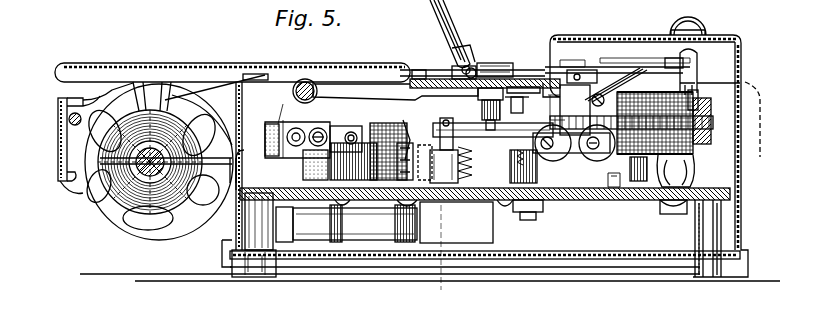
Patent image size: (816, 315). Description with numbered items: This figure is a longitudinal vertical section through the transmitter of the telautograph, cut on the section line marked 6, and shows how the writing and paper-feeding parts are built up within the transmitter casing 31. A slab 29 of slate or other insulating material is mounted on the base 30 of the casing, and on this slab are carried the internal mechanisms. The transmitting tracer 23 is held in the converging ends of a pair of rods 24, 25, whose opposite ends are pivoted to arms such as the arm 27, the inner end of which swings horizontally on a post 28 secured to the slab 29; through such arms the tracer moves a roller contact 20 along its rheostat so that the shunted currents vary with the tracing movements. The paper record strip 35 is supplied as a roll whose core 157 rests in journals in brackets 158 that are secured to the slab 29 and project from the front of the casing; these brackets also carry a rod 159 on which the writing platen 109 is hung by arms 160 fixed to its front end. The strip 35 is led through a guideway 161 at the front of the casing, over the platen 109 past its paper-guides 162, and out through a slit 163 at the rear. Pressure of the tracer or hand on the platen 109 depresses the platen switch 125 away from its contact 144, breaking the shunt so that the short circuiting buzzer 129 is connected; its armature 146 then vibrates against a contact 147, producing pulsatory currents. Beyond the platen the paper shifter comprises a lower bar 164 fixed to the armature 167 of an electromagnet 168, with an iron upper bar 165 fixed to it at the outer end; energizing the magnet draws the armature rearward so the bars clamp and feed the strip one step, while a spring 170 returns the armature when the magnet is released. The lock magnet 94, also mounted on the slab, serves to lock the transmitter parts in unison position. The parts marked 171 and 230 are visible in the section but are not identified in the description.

The section line 6- 6 is at (540, 60).
The roller contact 20 is at (405, 155).
The transmitting tracer 23 is at (459, 44).
The rod 24 is at (494, 66).
The rod 25 is at (595, 73).
The arm 27 is at (628, 78).
The post 28 is at (536, 172).
The slab 29 is at (606, 203).
The base 30 is at (593, 257).
The transmitter casing 31 is at (236, 130).
The paper record strip 35 is at (143, 112).
The lock magnet 94 is at (595, 160).
The writing platen 109 is at (440, 80).
The platen switch 125 is at (520, 136).
The short circuiting buzzer 129 is at (318, 128).
The contact 144 is at (512, 160).
The armature 146 is at (296, 126).
The contact 147 is at (236, 170).
The core 157 is at (135, 182).
The bracket 158 is at (75, 147).
The rod 159 is at (300, 82).
The arm 160 is at (362, 92).
The guideway 161 is at (247, 75).
The paper-guide 162 is at (466, 78).
The slit 163 is at (742, 84).
The lower bar 164 is at (612, 70).
The upper bar 165 is at (598, 72).
The armature 167 is at (576, 110).
The electromagnet 168 is at (697, 84).
The spring 170 is at (688, 165).
The link 171 is at (545, 70).
The terminal post 230 is at (698, 66).